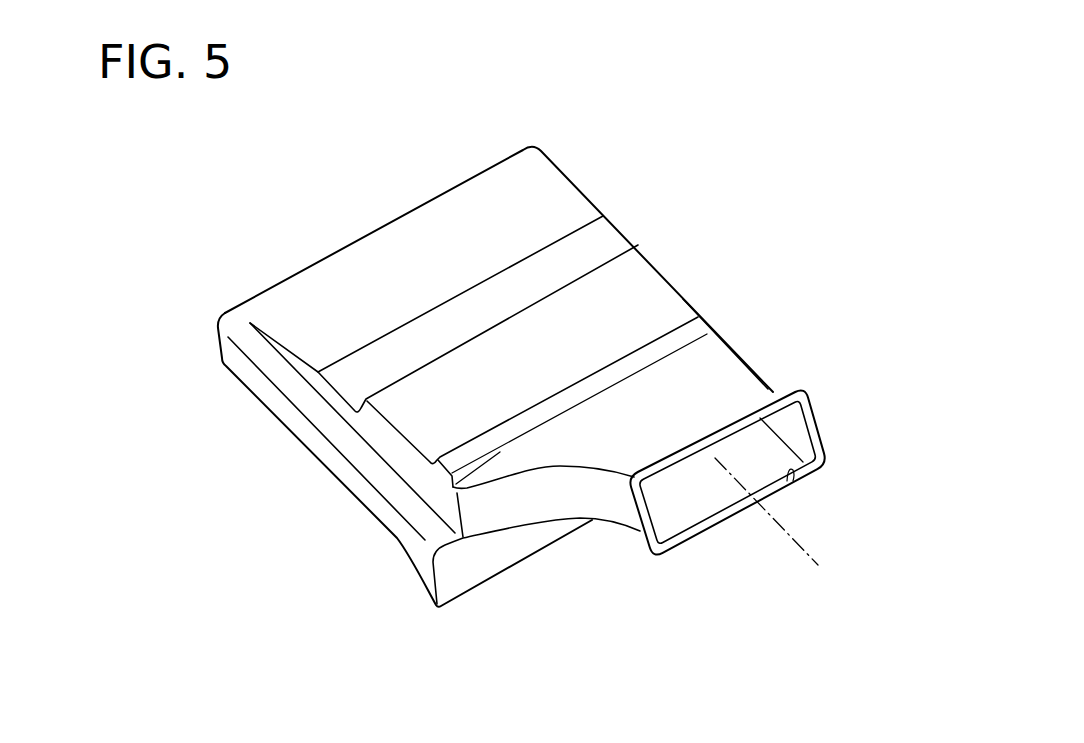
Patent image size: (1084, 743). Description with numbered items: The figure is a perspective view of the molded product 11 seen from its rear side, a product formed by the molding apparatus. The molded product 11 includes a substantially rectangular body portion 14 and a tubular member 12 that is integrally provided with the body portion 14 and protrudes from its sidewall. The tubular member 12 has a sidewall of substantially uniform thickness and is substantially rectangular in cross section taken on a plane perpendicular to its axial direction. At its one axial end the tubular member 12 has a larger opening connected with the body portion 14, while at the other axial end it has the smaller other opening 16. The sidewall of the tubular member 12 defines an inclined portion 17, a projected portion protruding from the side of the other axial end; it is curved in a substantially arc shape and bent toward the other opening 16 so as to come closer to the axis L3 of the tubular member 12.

The molded product 11 is at (776, 228).
The tubular member 12 is at (647, 545).
The body portion 14 is at (571, 202).
The other opening 16 is at (797, 470).
The inclined portion 17 is at (562, 507).
The axis L3 is at (784, 532).